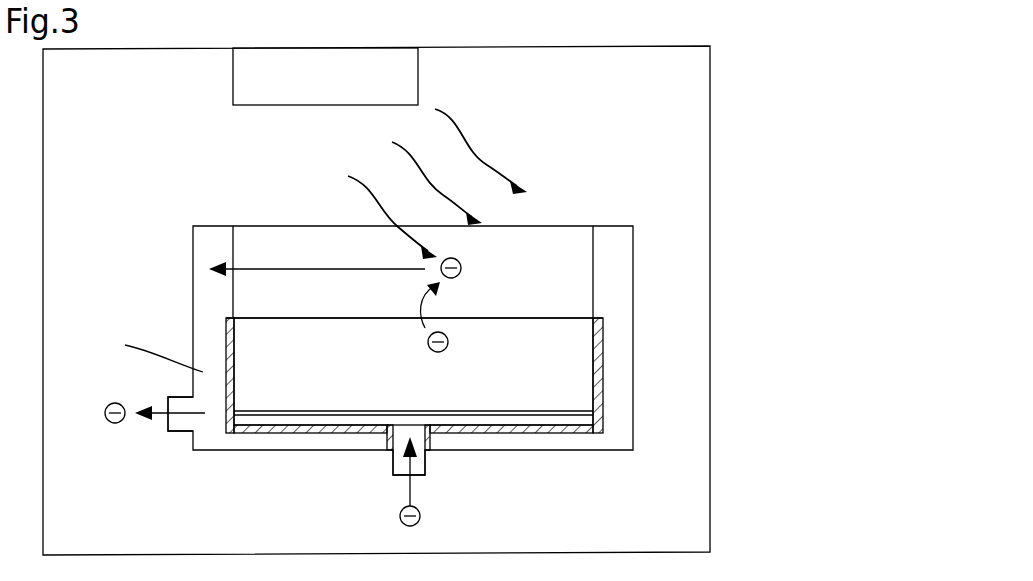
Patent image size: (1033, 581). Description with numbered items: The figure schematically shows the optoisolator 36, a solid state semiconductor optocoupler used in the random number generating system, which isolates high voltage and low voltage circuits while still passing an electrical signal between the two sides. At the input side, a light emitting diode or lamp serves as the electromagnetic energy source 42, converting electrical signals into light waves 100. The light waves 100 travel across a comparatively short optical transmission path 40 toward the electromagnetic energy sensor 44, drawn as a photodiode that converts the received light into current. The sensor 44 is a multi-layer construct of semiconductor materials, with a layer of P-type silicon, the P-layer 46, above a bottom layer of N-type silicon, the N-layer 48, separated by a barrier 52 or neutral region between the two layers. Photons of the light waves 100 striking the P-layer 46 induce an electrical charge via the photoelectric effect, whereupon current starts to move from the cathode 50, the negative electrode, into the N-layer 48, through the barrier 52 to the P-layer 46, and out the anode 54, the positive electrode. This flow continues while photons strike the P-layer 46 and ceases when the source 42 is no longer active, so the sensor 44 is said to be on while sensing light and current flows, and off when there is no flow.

The optoisolator 36 is at (715, 237).
The optical transmission path 40 is at (562, 253).
The electromagnetic energy source 42 is at (232, 103).
The electromagnetic energy sensor 44 is at (602, 393).
The P-layer 46 is at (540, 300).
The N-layer 48 is at (554, 376).
The cathode 50 is at (415, 462).
The barrier 52 is at (248, 318).
The anode 54 is at (190, 419).
The light waves 100 is at (430, 173).